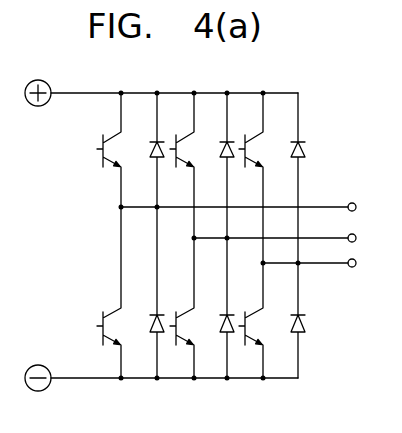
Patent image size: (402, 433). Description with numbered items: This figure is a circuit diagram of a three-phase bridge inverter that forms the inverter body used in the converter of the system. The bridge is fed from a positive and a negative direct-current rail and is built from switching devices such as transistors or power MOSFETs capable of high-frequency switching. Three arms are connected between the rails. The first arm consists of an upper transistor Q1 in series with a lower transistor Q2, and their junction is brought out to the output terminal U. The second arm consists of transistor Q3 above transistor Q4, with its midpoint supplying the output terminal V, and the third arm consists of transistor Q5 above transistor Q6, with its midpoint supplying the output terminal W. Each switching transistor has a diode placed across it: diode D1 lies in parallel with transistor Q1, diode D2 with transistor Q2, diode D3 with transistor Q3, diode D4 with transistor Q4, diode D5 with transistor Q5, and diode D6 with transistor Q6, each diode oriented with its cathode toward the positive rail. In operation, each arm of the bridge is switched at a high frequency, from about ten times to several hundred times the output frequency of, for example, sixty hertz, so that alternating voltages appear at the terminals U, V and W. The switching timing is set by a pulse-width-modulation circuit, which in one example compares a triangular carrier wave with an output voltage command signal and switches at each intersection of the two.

The transistor Q1 is at (119, 150).
The transistor Q2 is at (119, 292).
The transistor Q3 is at (191, 165).
The transistor Q4 is at (191, 308).
The transistor Q5 is at (261, 178).
The transistor Q6 is at (261, 320).
The diode D1 is at (167, 150).
The diode D2 is at (168, 292).
The diode D3 is at (236, 165).
The diode D4 is at (238, 308).
The diode D5 is at (309, 178).
The diode D6 is at (309, 320).
The output terminal U is at (248, 208).
The output terminal V is at (285, 238).
The output terminal W is at (322, 263).